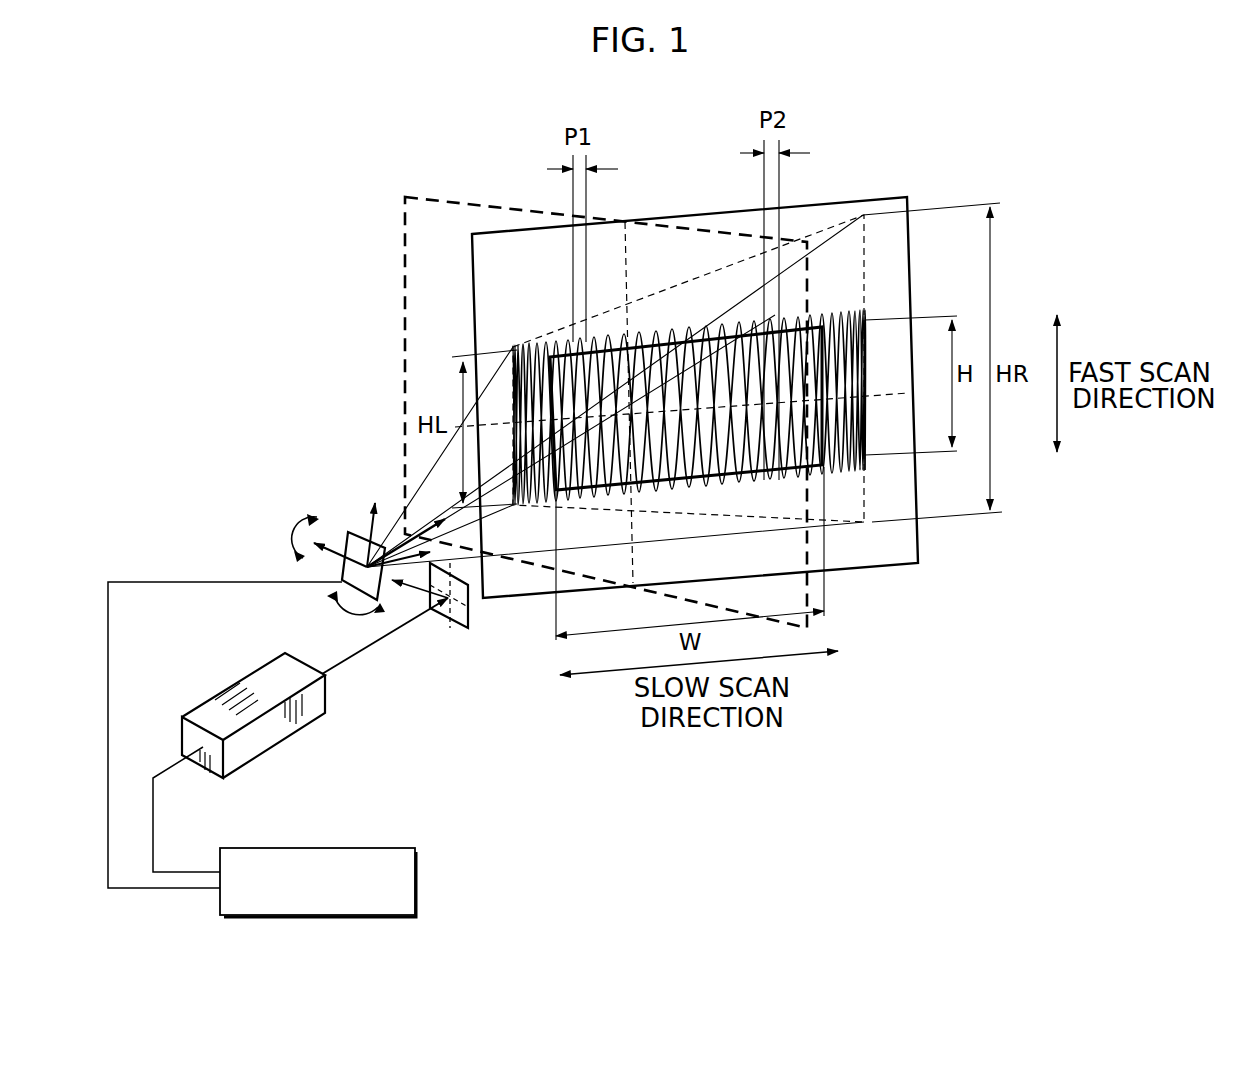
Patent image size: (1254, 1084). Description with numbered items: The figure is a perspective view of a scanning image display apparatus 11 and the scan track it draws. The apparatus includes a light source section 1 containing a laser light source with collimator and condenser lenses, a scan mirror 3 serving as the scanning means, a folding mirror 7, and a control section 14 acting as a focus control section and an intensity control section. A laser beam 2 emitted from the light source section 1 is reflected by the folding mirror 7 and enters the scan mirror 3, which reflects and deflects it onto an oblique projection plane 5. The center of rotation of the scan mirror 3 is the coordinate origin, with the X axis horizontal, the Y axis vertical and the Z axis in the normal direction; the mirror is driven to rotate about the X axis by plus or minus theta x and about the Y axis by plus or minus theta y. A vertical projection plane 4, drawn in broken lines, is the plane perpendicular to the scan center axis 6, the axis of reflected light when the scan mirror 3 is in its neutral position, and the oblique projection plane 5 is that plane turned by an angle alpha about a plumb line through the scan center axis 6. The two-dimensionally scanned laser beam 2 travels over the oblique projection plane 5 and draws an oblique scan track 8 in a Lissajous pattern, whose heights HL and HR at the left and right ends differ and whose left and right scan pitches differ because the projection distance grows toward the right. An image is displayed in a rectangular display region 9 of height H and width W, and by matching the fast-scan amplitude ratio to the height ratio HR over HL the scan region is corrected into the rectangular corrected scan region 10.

The light source section 1 is at (265, 738).
The laser beam 2 is at (335, 665).
The scan mirror 3 is at (352, 530).
The vertical projection plane 4 is at (484, 204).
The oblique projection plane 5 is at (717, 207).
The scan center axis 6 is at (508, 497).
The folding mirror 7 is at (449, 628).
The oblique scan track 8 is at (870, 247).
The display region 9 is at (793, 473).
The corrected scan region 10 is at (863, 423).
The scanning image display apparatus 11 is at (197, 452).
The control section 14 is at (418, 882).